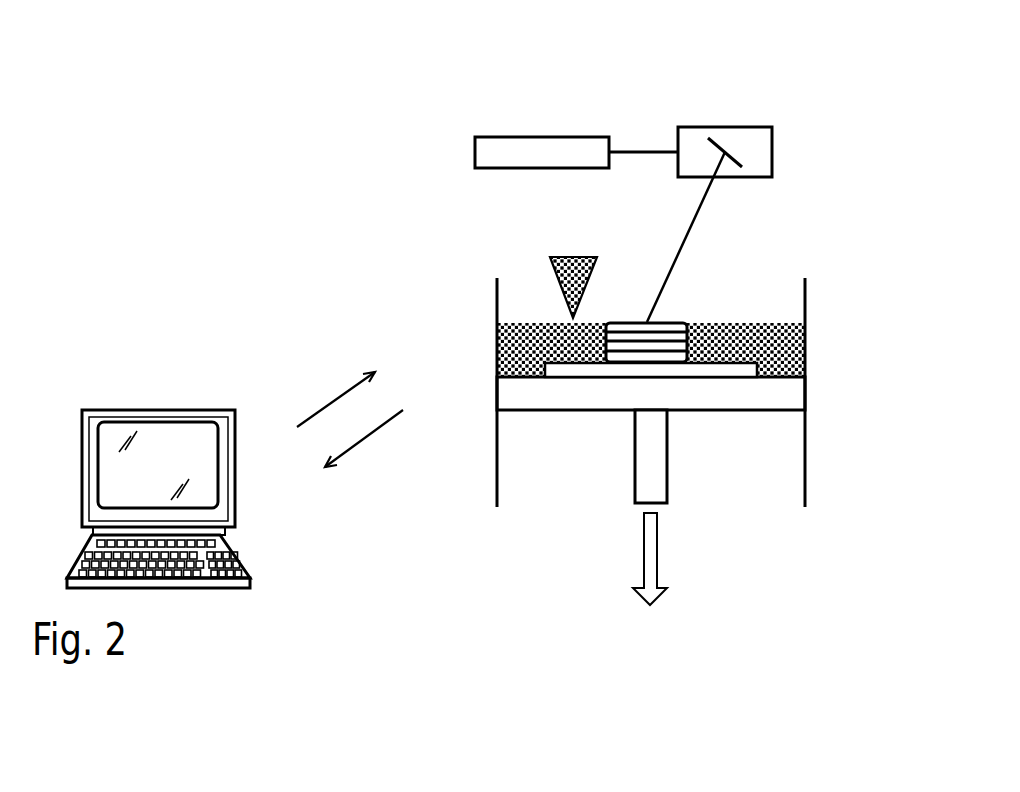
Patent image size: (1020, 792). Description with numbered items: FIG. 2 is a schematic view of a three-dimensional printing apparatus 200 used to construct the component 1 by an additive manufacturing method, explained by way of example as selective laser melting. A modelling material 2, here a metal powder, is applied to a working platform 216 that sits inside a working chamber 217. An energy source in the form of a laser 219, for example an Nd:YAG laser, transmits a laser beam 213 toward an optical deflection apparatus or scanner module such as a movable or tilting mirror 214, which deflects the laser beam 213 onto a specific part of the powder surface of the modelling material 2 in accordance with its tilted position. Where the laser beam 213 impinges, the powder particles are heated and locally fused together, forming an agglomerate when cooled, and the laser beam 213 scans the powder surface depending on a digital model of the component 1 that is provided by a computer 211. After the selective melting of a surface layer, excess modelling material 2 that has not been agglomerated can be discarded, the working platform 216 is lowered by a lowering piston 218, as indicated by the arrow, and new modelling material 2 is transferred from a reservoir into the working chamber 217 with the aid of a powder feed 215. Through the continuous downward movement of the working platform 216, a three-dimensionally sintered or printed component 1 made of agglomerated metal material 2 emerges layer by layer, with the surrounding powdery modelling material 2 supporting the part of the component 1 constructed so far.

The 3D printing apparatus 200 is at (456, 98).
The laser 219 is at (541, 136).
The tilting mirror 214 is at (738, 150).
The laser beam 213 is at (697, 216).
The powder feed 215 is at (596, 262).
The component 1 is at (685, 323).
The modelling material 2 is at (505, 347).
The working platform 216 is at (566, 372).
The working chamber 217 is at (497, 487).
The lowering piston 218 is at (670, 485).
The computer 211 is at (276, 580).